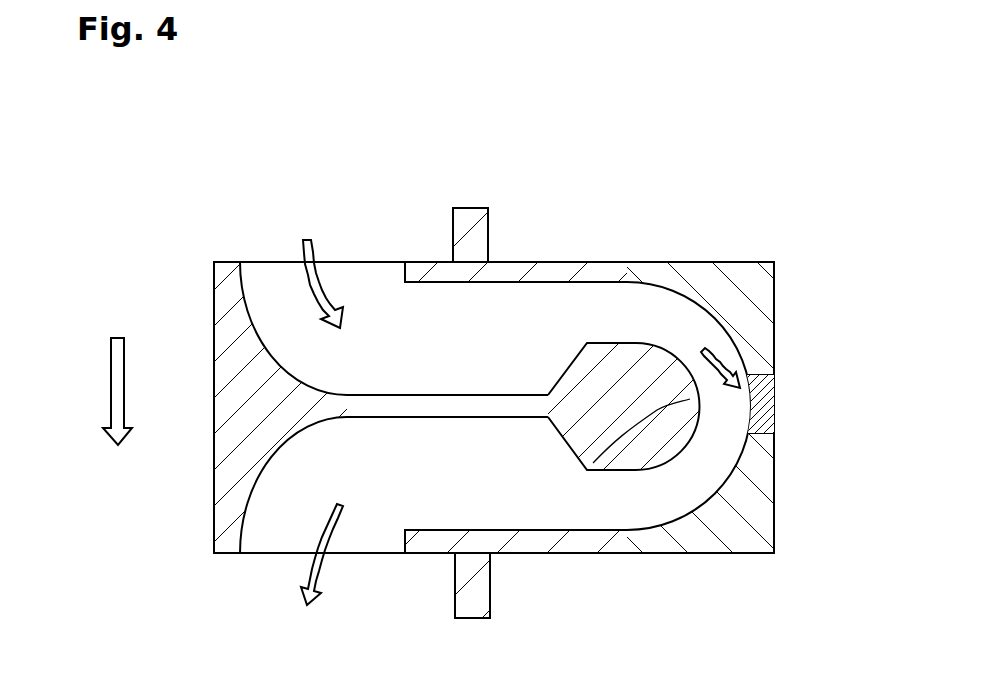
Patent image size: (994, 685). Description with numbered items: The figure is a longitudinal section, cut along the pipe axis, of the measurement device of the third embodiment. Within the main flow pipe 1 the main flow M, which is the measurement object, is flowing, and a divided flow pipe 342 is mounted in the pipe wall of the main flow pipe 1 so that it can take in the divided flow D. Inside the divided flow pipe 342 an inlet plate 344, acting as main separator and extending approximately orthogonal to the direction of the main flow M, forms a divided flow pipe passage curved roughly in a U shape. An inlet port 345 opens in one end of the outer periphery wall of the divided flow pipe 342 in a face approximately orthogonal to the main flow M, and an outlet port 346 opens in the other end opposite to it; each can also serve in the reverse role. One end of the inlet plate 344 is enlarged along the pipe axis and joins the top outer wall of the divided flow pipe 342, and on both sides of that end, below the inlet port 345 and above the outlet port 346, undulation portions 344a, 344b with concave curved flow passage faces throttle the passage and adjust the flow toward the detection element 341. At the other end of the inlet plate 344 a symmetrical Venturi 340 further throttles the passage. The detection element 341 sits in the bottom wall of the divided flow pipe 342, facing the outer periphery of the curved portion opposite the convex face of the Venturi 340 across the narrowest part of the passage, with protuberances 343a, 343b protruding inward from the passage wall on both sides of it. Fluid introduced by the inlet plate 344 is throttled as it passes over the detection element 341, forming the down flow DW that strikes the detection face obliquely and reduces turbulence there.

The main flow pipe 1 is at (491, 598).
The Venturi 340 is at (585, 466).
The detection element 341 is at (775, 401).
The divided flow pipe 342 is at (528, 218).
The protuberance 343a is at (740, 343).
The protuberance 343b is at (737, 471).
The inlet plate 344 is at (440, 395).
The undulation portion 344a is at (263, 373).
The undulation portion 344b is at (263, 450).
The inlet port 345 is at (267, 262).
The outlet port 346 is at (267, 555).
The divided flow D is at (312, 243).
The down flow DW is at (703, 348).
The main flow M is at (111, 383).